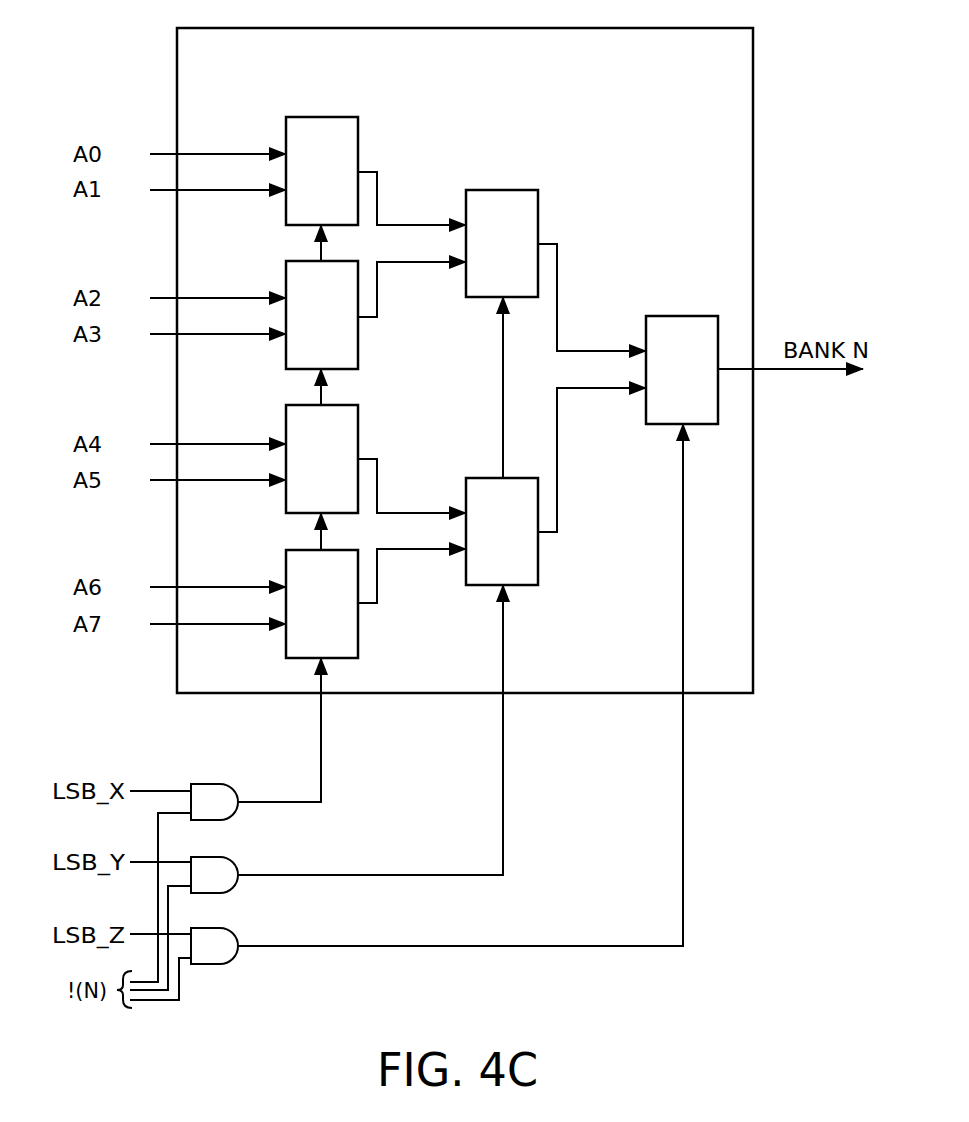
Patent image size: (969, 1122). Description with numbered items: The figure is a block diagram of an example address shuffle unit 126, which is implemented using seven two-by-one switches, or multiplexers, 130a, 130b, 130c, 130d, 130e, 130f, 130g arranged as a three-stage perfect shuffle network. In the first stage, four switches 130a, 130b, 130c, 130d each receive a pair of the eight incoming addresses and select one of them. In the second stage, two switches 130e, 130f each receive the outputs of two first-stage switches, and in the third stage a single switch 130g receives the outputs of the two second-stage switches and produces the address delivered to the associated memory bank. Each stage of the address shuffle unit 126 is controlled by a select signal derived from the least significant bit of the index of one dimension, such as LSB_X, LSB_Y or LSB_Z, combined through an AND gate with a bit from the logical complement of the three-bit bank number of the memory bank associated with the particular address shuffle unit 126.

The address shuffle unit 126 is at (252, 27).
The 2×1 switch 130a is at (298, 117).
The 2×1 switch 130b is at (298, 261).
The 2×1 switch 130c is at (298, 405).
The 2×1 switch 130d is at (298, 550).
The 2×1 switch 130e is at (478, 190).
The 2×1 switch 130f is at (482, 478).
The 2×1 switch 130g is at (677, 316).